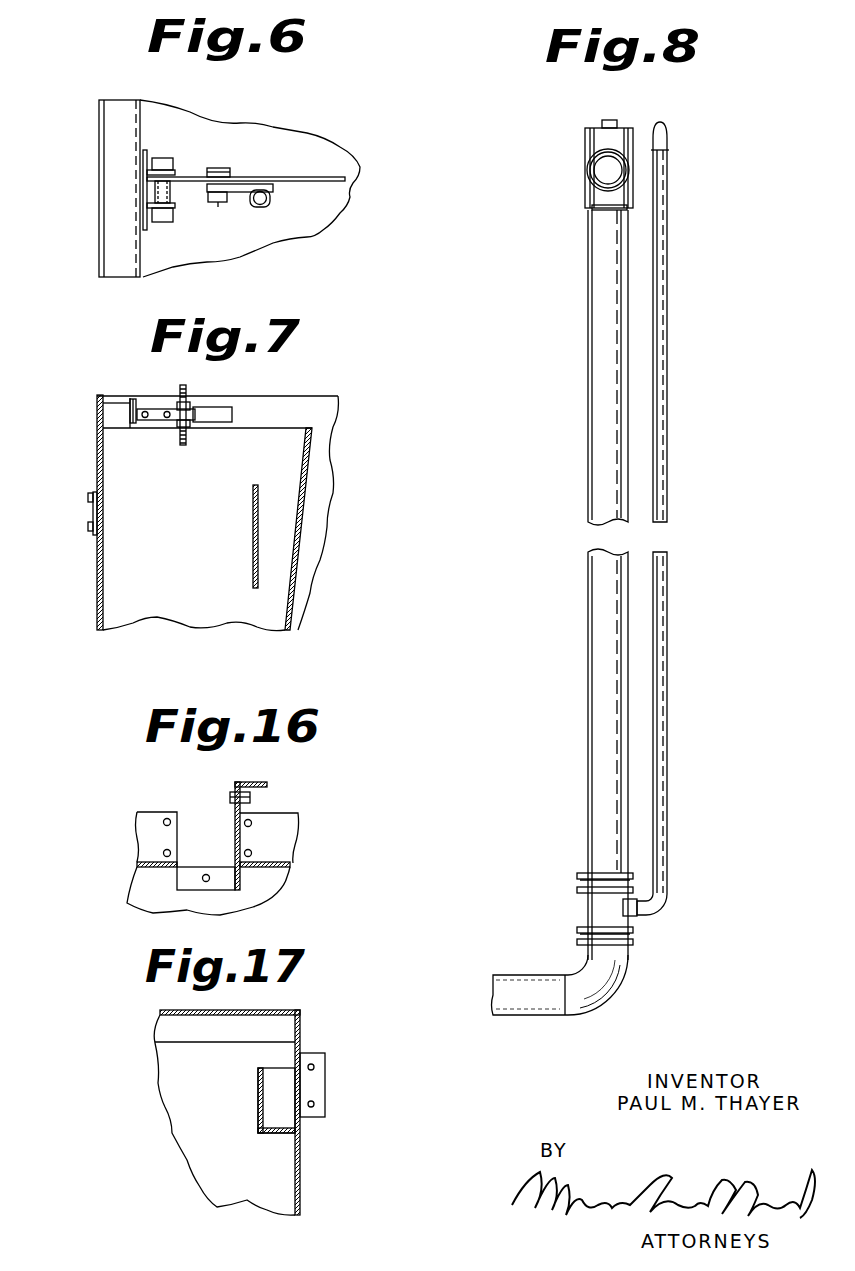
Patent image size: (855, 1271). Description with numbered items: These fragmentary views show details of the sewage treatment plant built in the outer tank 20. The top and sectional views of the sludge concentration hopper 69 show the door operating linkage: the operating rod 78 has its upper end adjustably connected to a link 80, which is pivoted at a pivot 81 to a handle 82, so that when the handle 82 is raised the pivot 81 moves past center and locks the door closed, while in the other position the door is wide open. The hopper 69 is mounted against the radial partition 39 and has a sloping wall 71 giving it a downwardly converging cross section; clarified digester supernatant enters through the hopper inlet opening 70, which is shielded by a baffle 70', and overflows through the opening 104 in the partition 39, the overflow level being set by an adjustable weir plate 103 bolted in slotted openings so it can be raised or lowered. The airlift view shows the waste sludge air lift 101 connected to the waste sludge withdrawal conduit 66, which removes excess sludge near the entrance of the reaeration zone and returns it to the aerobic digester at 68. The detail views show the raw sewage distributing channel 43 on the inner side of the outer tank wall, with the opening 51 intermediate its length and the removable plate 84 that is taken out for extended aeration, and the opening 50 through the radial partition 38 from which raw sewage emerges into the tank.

In FIG. 6, the radial partition 39 is at (99, 197).
In FIG. 7, the radial partition 39 is at (99, 444).
In FIG. 6, the digested sludge concentration hopper 69 is at (307, 146).
In FIG. 7, the digested sludge concentration hopper 69 is at (287, 442).
In FIG. 6, the handle 82 is at (343, 177).
In FIG. 7, the handle 82 is at (233, 410).
In FIG. 6, the pivot 81 is at (221, 169).
In FIG. 7, the pivot 81 is at (168, 408).
In FIG. 6, the link 80 is at (240, 193).
In FIG. 7, the link 80 is at (172, 432).
In FIG. 6, the operating rod 78 is at (270, 200).
In FIG. 7, the operating rod 78 is at (187, 386).
In FIG. 7, the opening 104 is at (95, 475).
In FIG. 7, the adjustable weir plate 103 is at (88, 515).
In FIG. 7, the sloping wall 71 is at (310, 452).
In FIG. 7, the hopper inlet opening 70 is at (243, 529).
In FIG. 7, the baffle 70' is at (226, 536).
In FIG. 16, the opening 51 is at (177, 837).
In FIG. 16, the plate 84 is at (235, 838).
In FIG. 16, the raw sewage distributing channel 43 is at (288, 862).
In FIG. 17, the raw sewage distributing channel 43 is at (278, 1128).
In FIG. 17, the radial partition 38 is at (204, 1085).
In FIG. 17, the outer tank 20 is at (301, 1156).
In FIG. 17, the opening 50 is at (283, 1072).
In FIG. 8, the aerobic digester return 68 is at (585, 165).
In FIG. 8, the air lift 101 is at (595, 609).
In FIG. 8, the waste sludge withdrawal conduit 66 is at (517, 978).